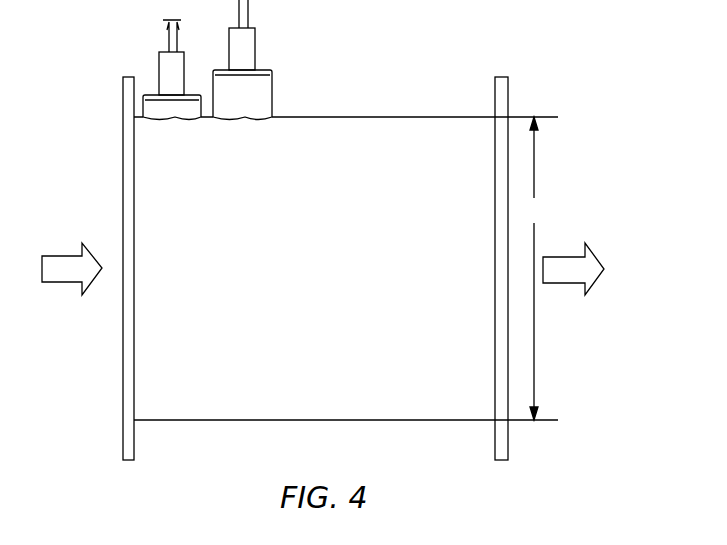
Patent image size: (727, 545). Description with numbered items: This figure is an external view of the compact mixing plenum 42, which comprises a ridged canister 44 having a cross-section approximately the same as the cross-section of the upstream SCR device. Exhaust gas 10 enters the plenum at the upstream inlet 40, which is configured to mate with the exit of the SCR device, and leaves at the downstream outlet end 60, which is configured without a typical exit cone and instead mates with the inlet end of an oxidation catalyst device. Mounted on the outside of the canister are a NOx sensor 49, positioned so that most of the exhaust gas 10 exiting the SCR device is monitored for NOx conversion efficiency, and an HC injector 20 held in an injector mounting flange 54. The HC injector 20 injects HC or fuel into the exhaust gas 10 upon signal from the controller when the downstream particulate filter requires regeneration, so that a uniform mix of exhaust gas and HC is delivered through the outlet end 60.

The exhaust gas 10 is at (63, 256).
The HC injector 20 is at (257, 58).
The inlet 40 is at (123, 107).
The compact mixing plenum 42 is at (371, 117).
The ridged canister 44 is at (302, 402).
The NOx sensor 49 is at (158, 72).
The injector mounting flange 54 is at (272, 92).
The outlet end 60 is at (508, 105).